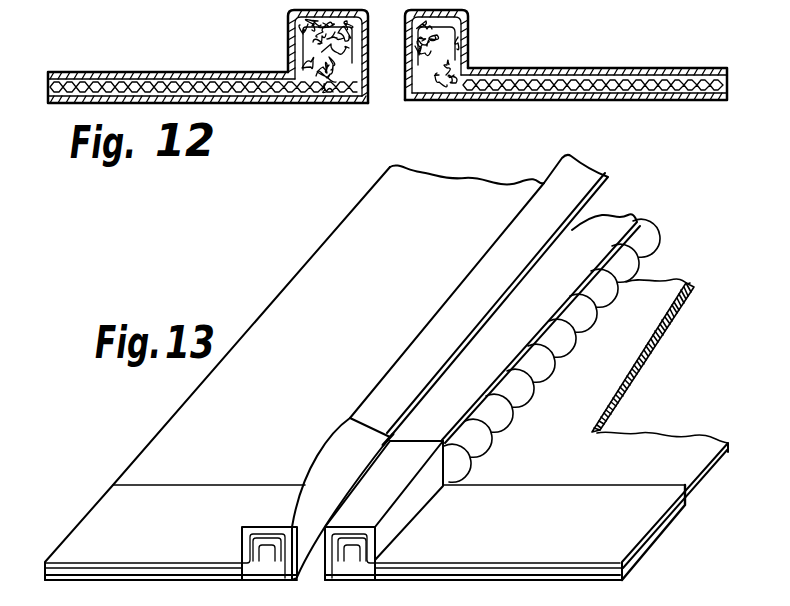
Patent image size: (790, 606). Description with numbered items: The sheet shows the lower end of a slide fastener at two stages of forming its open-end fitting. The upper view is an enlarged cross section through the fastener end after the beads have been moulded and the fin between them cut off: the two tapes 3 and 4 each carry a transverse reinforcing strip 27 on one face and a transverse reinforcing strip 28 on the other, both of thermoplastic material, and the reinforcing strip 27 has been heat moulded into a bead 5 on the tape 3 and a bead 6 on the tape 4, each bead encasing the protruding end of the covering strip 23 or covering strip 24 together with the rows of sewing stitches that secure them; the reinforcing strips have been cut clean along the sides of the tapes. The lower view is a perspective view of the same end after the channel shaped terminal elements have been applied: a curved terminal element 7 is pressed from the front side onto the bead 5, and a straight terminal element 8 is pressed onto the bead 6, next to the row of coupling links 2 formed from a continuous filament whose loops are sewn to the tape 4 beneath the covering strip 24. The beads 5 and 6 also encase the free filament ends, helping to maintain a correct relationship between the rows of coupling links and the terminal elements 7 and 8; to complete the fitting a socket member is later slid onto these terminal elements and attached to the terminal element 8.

In FIG. 13, the row of coupling links 2 is at (508, 402).
In FIG. 12, the tape 3 is at (180, 90).
In FIG. 13, the tape 3 is at (123, 572).
In FIG. 12, the tape 4 is at (597, 82).
In FIG. 13, the tape 4 is at (472, 570).
In FIG. 12, the bead 5 is at (298, 42).
In FIG. 13, the bead 5 is at (267, 556).
In FIG. 12, the bead 6 is at (452, 48).
In FIG. 13, the bead 6 is at (346, 556).
In FIG. 13, the terminal element 7 is at (337, 457).
In FIG. 13, the terminal element 8 is at (408, 463).
In FIG. 12, the covering strip 23 is at (333, 14).
In FIG. 13, the covering strip 23 is at (262, 540).
In FIG. 12, the covering strip 24 is at (445, 14).
In FIG. 13, the covering strip 24 is at (346, 556).
In FIG. 12, the transverse reinforcing strip 27 is at (117, 72).
In FIG. 13, the transverse reinforcing strip 27 is at (104, 503).
In FIG. 12, the transverse reinforcing strip 28 is at (262, 100).
In FIG. 13, the transverse reinforcing strip 28 is at (146, 583).